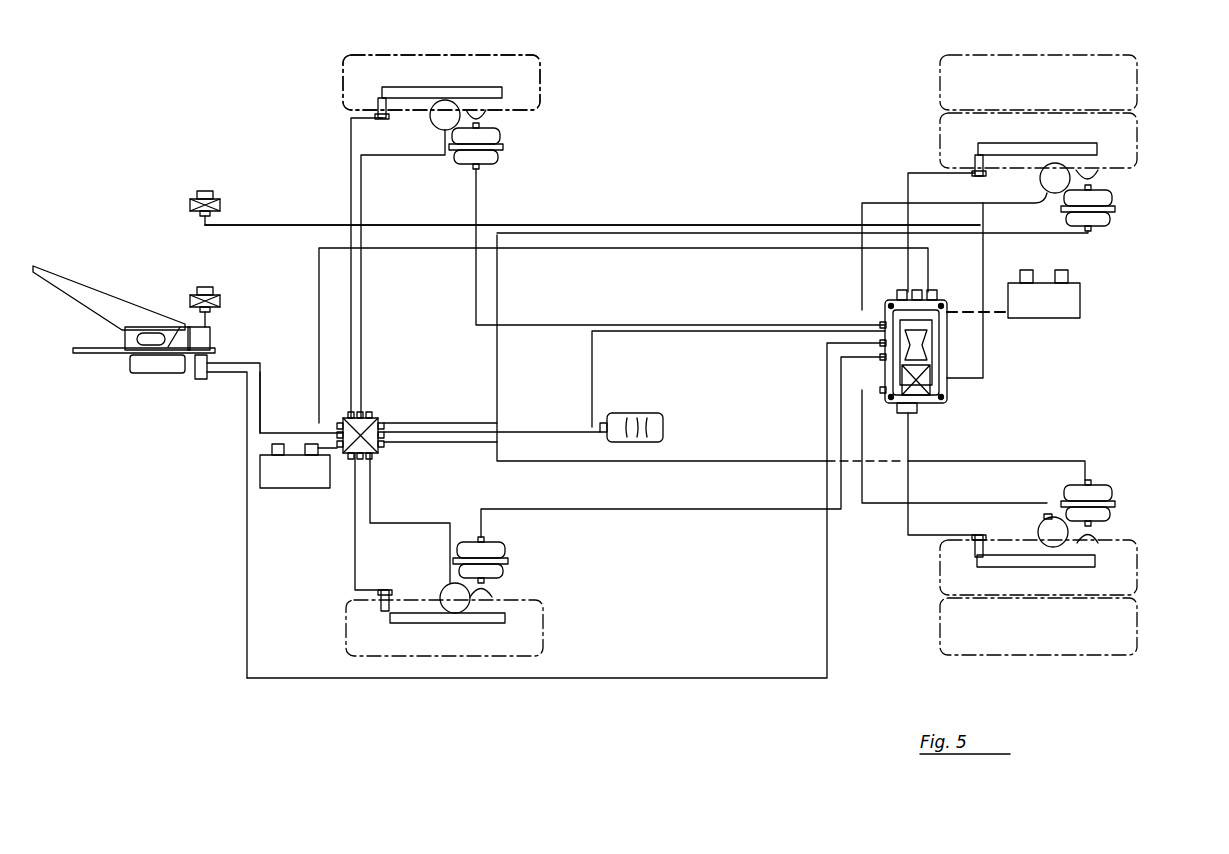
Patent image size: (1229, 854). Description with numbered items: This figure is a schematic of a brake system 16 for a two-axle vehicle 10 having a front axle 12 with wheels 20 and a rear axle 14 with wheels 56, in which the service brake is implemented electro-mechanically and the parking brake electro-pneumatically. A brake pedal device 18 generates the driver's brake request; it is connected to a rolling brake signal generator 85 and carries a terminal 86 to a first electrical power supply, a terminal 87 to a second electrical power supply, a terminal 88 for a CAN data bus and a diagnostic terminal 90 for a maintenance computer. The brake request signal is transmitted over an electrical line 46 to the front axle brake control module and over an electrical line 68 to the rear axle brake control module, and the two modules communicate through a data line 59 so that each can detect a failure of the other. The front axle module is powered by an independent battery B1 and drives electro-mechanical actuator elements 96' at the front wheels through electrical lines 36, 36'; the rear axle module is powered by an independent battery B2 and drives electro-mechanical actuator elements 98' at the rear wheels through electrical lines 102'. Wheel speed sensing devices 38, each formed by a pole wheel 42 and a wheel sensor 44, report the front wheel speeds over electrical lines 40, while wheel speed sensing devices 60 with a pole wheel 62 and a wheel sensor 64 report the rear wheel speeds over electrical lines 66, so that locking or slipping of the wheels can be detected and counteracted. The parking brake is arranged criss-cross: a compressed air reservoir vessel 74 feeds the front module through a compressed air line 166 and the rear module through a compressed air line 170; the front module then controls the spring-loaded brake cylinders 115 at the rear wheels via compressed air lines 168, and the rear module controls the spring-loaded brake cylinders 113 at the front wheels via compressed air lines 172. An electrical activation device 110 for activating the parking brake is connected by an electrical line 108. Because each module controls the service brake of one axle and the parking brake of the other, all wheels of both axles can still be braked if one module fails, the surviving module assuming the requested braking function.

The two-axle vehicle 10 is at (1168, 78).
The front axle 12 is at (433, 52).
The rear axle 14 is at (1058, 50).
The brake system 16 is at (702, 220).
The brake pedal device 18 is at (113, 374).
The wheels 20 is at (540, 78).
The electrical line 36 is at (410, 518).
The electrical lines 36' is at (403, 274).
The wheel speed sensing devices 38 is at (394, 110).
The electrical lines 40 is at (348, 155).
The pole wheel 42 is at (420, 87).
The wheel sensor 44 is at (378, 108).
The electrical line 46 is at (278, 432).
The wheels 56 is at (1134, 165).
The data line 59 is at (702, 252).
The wheel speed sensing devices 60 is at (990, 162).
The pole wheel 62 is at (1062, 143).
The wheel sensor 64 is at (972, 162).
The electrical lines 66 is at (908, 180).
The electrical line 68 is at (822, 564).
The compressed air reservoir vessel 74 is at (663, 428).
The rolling brake signal generator 85 is at (192, 288).
The terminal 86 is at (222, 310).
The terminal 87 is at (213, 324).
The terminal 88 is at (213, 334).
The diagnostic terminal 90 is at (220, 352).
The electro-mechanical actuator elements 96' is at (433, 356).
The electro-mechanical actuator elements 98' is at (995, 356).
The electrical lines 102' is at (954, 348).
The electrical line 108 is at (272, 232).
The electrical activation device 110 is at (220, 208).
The spring-loaded brake cylinders 113 is at (466, 168).
The spring-loaded brake cylinders 115 is at (1114, 222).
The compressed air line 166 is at (536, 430).
The compressed air lines 168 is at (1026, 238).
The compressed air line 170 is at (592, 392).
The compressed air lines 172 is at (488, 182).
The battery B1 is at (296, 489).
The battery B2 is at (1082, 306).